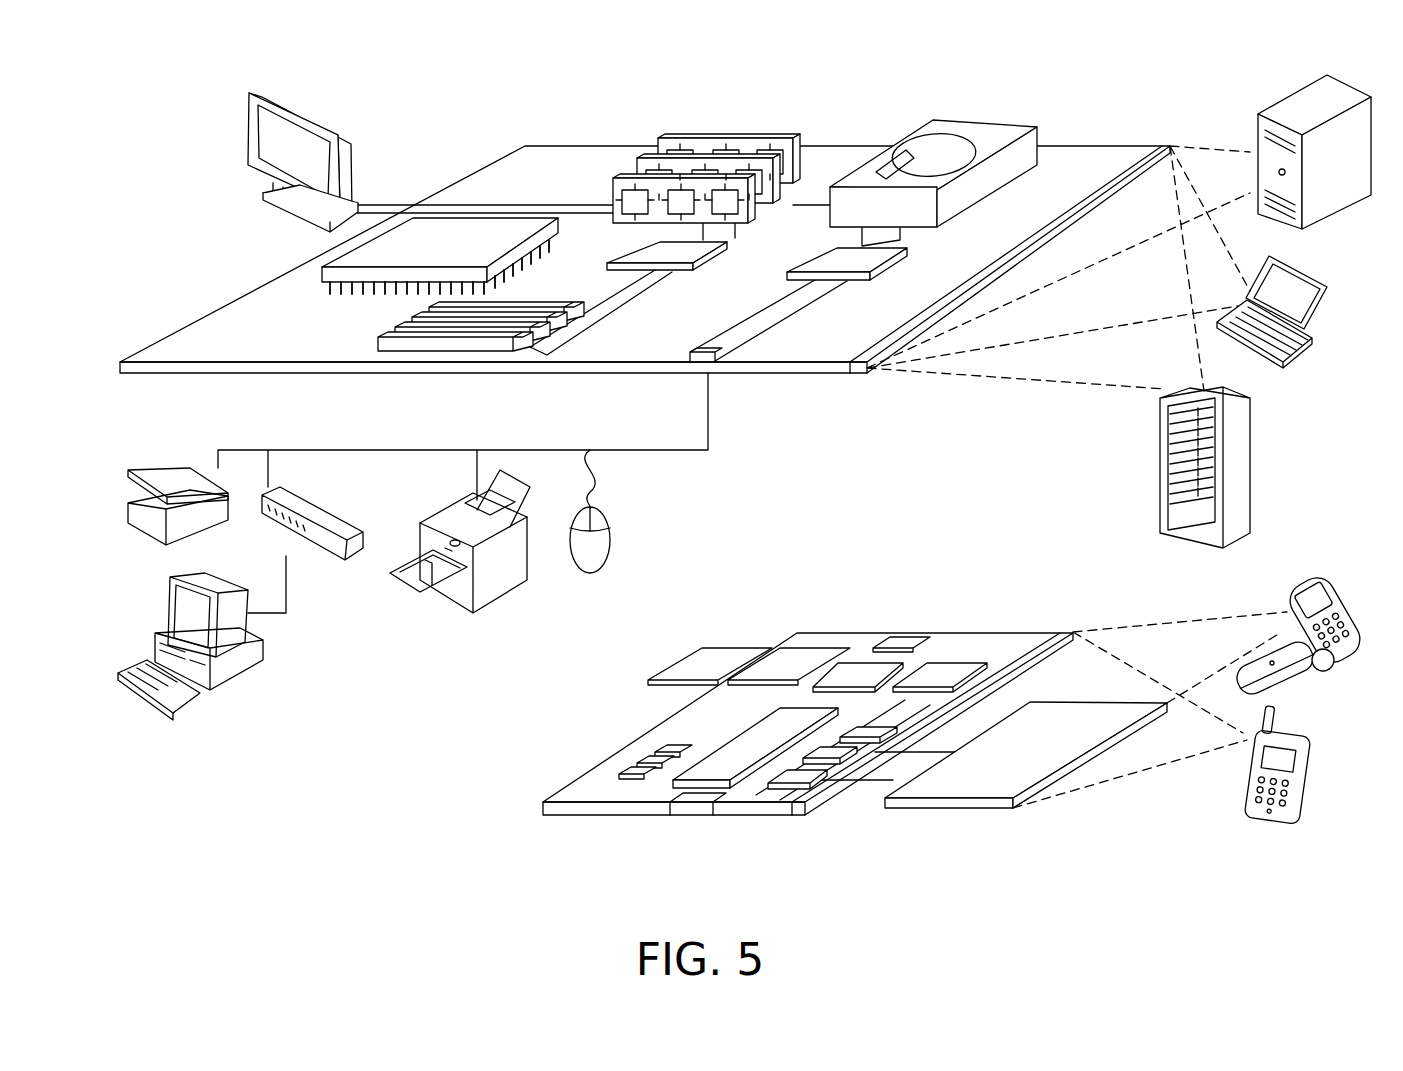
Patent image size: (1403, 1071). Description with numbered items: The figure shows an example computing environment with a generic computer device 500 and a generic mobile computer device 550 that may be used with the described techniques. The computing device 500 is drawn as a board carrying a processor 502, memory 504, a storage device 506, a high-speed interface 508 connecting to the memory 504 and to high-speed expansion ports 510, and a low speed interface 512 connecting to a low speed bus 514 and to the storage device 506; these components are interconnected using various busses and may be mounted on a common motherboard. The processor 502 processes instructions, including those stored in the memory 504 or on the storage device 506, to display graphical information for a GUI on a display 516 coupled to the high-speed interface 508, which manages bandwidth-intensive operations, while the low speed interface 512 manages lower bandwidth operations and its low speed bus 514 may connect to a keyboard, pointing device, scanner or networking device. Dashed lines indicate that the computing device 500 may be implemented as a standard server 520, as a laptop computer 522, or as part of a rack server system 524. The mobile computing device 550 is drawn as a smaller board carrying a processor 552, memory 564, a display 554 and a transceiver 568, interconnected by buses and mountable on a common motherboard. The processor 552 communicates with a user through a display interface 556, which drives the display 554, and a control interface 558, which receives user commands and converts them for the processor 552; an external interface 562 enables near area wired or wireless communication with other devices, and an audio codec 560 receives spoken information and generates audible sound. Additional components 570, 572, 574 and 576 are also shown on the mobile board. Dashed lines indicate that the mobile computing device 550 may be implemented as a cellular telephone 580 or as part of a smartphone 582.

The computing device 500 is at (452, 106).
The processor 502 is at (332, 265).
The memory 504 is at (680, 178).
The storage device 506 is at (920, 126).
The high-speed interface 508 is at (640, 254).
The high-speed expansion ports 510 is at (400, 331).
The low speed interface 512 is at (828, 268).
The low speed bus 514 is at (716, 362).
The display 516 is at (252, 94).
The standard server 520 is at (1262, 146).
The laptop computer 522 is at (1312, 293).
The rack server system 524 is at (1162, 500).
The mobile computer device 550 is at (496, 822).
The processor 552 is at (732, 776).
The display 554 is at (980, 788).
The display interface 556 is at (812, 786).
The control interface 558 is at (846, 762).
The audio codec 560 is at (867, 738).
The external interface 562 is at (697, 814).
The memory 564 is at (650, 770).
The transceiver 568 is at (940, 670).
The antenna module 570 is at (900, 640).
The component 572 is at (778, 650).
The component 574 is at (702, 650).
The component 576 is at (850, 670).
The cellular telephone 580 is at (1310, 598).
The smartphone 582 is at (1245, 766).